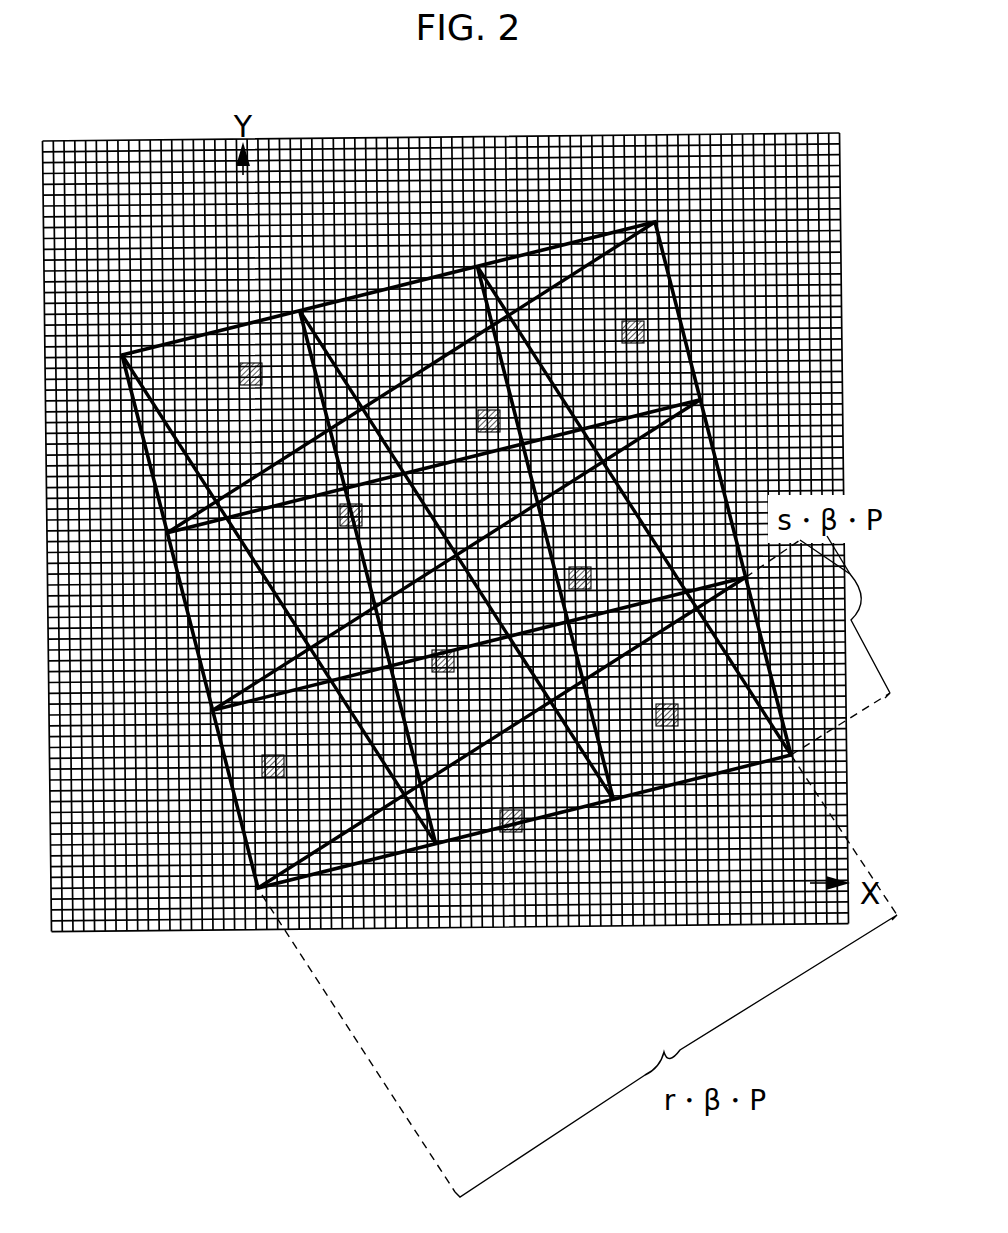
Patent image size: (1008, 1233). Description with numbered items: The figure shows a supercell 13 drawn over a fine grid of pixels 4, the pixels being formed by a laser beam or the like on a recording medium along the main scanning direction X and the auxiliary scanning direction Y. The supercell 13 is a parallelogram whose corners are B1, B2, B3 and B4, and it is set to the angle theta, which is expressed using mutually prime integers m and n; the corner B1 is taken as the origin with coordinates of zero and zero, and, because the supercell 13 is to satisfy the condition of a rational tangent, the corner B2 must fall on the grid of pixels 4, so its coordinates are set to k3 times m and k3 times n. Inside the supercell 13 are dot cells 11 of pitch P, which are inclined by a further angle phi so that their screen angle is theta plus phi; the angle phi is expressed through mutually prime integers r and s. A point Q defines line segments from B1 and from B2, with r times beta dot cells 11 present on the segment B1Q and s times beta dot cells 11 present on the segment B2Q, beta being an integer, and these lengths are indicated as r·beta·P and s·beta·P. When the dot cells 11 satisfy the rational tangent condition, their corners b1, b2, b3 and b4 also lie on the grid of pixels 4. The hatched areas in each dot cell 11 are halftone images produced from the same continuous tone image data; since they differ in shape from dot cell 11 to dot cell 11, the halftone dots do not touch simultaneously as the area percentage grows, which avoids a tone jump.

The pixels 4 is at (665, 325).
The dot cells 11 is at (355, 645).
The supercell 13 is at (728, 472).
The corner B1 is at (258, 888).
The corner B2 is at (700, 860).
The corner B3 is at (655, 222).
The corner B4 is at (122, 355).
The corner b1 is at (393, 745).
The corner b2 is at (580, 740).
The corner b3 is at (467, 560).
The corner b4 is at (285, 622).
The point Q is at (791, 755).
The angle theta is at (365, 870).
The angle phi is at (318, 873).